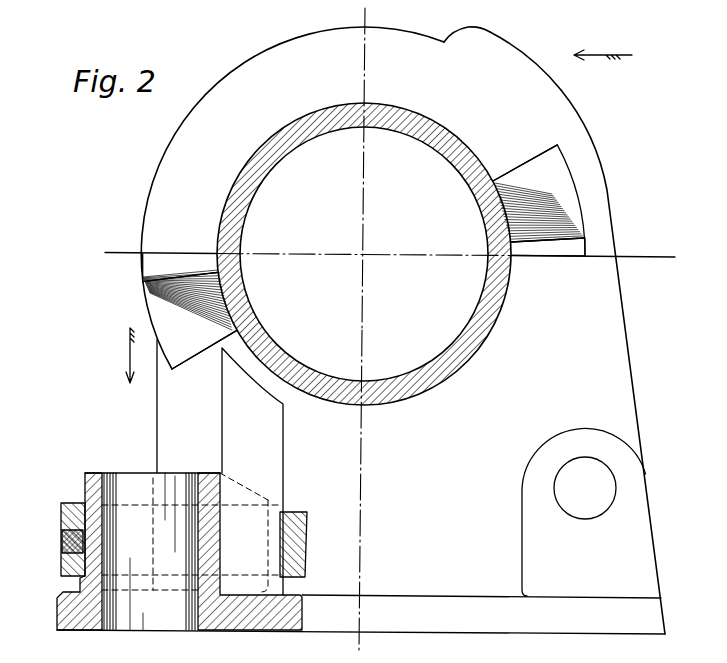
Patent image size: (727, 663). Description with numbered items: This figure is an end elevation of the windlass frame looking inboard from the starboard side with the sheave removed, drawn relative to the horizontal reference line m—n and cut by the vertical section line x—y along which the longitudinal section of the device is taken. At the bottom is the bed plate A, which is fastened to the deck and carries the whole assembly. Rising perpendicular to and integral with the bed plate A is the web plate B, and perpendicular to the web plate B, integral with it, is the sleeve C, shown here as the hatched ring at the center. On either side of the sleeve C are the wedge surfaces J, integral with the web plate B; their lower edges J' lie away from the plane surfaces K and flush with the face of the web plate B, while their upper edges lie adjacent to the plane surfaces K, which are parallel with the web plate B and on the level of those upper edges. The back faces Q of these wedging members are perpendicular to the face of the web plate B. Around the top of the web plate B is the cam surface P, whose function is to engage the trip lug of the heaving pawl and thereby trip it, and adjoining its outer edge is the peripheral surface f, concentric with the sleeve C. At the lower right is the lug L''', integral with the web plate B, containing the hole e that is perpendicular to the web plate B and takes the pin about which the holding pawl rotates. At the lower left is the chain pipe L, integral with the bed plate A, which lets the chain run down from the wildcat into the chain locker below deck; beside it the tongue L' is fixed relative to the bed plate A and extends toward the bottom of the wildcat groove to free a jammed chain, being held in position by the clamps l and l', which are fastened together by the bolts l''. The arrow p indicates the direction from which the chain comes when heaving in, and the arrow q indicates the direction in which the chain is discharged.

The bed plate A is at (361, 553).
The web plate B is at (315, 239).
The sleeve C is at (440, 357).
The wedge surfaces J is at (393, 257).
The lower edges of wedge surfaces J' is at (364, 260).
The plane surfaces K is at (159, 258).
The back faces of wedging members Q is at (189, 250).
The chain pipe L is at (192, 551).
The tongue L' is at (184, 467).
The lug L''' is at (584, 512).
The clamp l is at (304, 544).
The clamp l' is at (43, 546).
The bolts l'' is at (47, 531).
The hole e is at (585, 488).
The peripheral surface f is at (578, 115).
The cam surface P is at (511, 61).
The arrow p is at (615, 55).
The arrow q is at (116, 355).
The horizontal reference line m is at (220, 254).
The horizontal reference line n is at (527, 259).
The section line x is at (353, 165).
The section line y is at (350, 496).